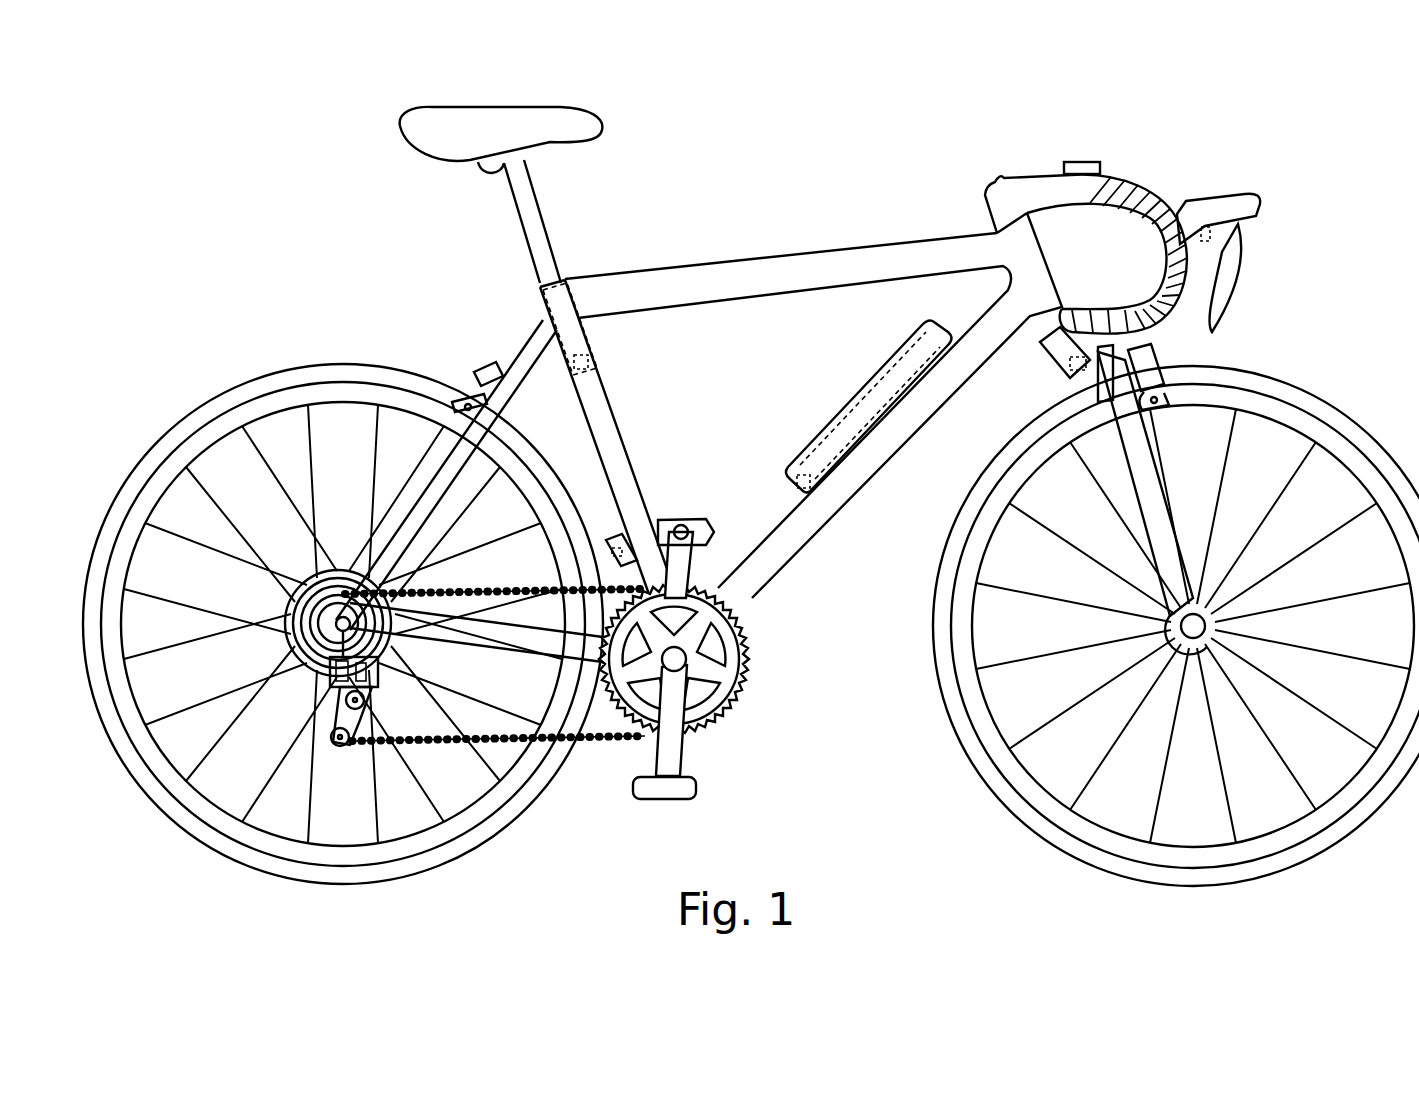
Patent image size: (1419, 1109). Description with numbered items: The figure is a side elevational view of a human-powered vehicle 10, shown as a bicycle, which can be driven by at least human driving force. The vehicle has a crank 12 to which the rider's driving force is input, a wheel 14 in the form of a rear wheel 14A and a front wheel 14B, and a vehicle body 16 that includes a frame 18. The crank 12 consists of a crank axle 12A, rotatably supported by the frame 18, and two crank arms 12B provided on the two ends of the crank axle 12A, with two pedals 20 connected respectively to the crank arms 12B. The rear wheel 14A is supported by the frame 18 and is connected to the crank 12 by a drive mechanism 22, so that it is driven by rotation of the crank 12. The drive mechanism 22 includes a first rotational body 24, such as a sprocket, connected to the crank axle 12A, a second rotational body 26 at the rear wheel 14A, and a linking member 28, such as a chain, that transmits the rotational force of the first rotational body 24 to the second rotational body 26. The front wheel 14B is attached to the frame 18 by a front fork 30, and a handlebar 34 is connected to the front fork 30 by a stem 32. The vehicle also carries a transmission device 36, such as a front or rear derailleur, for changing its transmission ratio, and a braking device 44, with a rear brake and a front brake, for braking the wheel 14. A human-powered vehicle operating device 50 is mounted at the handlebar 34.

The human-powered vehicle 10 is at (751, 479).
The crank 12 is at (736, 660).
The crank axle 12A is at (701, 722).
The crank arms 12B is at (681, 565).
The wheel 14 is at (751, 599).
The rear wheel 14A is at (318, 366).
The front wheel 14B is at (1352, 416).
The vehicle body 16 is at (699, 387).
The frame 18 is at (820, 260).
The pedals 20 is at (700, 525).
The drive mechanism 22 is at (540, 671).
The first rotational body 24 is at (747, 690).
The second rotational body 26 is at (300, 598).
The linking member 28 is at (600, 745).
The front fork 30 is at (1135, 545).
The stem 32 is at (1037, 188).
The handlebar 34 is at (1133, 190).
The transmission device 36 is at (612, 542).
The braking device 44 is at (474, 372).
The human-powered vehicle operating device 50 is at (1256, 214).